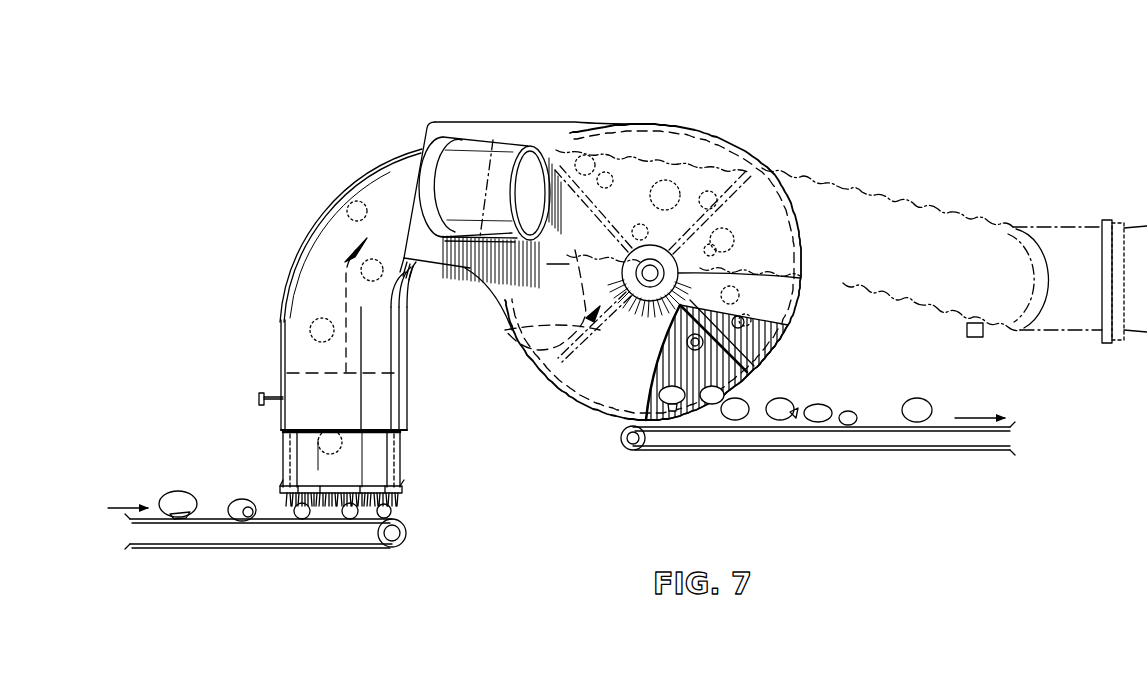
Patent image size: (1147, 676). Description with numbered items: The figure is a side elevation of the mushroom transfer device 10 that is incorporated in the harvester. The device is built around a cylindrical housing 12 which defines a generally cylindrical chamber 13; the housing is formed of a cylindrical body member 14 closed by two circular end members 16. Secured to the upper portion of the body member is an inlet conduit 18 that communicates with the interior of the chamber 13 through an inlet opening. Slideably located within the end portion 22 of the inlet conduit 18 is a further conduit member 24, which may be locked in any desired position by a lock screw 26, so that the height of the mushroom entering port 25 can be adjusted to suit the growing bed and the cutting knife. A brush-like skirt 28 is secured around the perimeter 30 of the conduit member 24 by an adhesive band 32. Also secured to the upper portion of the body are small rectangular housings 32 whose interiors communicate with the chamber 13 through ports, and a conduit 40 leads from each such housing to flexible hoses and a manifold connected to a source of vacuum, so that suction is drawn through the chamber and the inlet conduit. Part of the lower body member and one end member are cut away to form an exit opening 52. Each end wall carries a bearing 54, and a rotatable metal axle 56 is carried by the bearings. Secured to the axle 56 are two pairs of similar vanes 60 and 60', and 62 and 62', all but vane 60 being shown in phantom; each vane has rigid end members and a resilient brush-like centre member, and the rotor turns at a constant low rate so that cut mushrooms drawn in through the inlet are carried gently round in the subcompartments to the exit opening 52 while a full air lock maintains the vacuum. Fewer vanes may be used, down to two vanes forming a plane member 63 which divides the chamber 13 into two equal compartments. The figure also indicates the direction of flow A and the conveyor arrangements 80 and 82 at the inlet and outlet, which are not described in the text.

The transfer device 10 is at (582, 94).
The direction of mushroom flow A is at (812, 108).
The cylindrical housing 12 is at (787, 228).
The cylindrical chamber 13 is at (558, 253).
The cylindrical body member 14 is at (790, 171).
The circular end member 16 is at (529, 368).
The inlet conduit 18 is at (393, 160).
The end portion of inlet conduit 22 is at (408, 411).
The conduit member 24 is at (401, 457).
The mushroom entering port 25 is at (343, 503).
The lock screw 26 is at (258, 399).
The brush-like skirt 28 is at (401, 514).
The perimeter of conduit member 30 is at (402, 488).
The adhesive band / rectangular housing 32 is at (441, 128).
The conduit 40 is at (483, 270).
The exit opening 52 is at (770, 355).
The bearing 54 is at (778, 276).
The axle 56 is at (647, 312).
The vane 60 is at (764, 336).
The vane 60' is at (604, 209).
The vane 62 is at (561, 322).
The vane 62' is at (695, 202).
The plane member 63 is at (522, 317).
The infeed conveyor 80 is at (403, 539).
The outfeed conveyor 82 is at (866, 441).